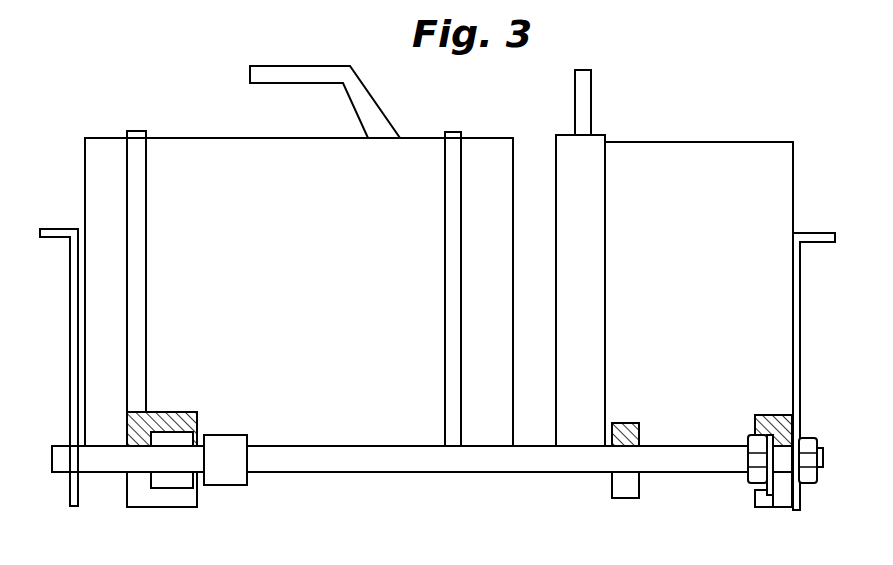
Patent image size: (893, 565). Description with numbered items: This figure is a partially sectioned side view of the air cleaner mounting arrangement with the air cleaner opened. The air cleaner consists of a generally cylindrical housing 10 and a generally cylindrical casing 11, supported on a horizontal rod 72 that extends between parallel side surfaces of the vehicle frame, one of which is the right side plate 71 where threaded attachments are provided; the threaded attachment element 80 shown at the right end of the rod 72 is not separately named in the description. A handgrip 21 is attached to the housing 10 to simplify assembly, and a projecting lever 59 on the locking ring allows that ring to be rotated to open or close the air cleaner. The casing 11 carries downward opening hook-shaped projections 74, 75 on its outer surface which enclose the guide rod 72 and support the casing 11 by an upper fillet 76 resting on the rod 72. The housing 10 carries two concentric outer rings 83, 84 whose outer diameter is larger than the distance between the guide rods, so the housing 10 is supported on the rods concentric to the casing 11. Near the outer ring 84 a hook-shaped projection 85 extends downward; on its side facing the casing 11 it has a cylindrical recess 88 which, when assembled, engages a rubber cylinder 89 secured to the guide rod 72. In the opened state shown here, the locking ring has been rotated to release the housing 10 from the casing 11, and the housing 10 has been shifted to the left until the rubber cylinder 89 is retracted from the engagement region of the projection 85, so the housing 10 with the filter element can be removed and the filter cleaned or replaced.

The housing 10 is at (213, 156).
The casing 11 is at (667, 156).
The handgrip 21 is at (310, 66).
The projecting lever 59 is at (586, 85).
The side surface 71 is at (812, 232).
The horizontal rod 72 is at (376, 464).
The hook-shaped projection 74 is at (628, 490).
The hook-shaped projection 75 is at (783, 490).
The upper fillet 76 is at (60, 228).
The nut 80 is at (748, 462).
The outer ring 83 is at (451, 138).
The outer ring 84 is at (137, 130).
The hook-shaped projection 85 is at (142, 493).
The cylindrical recess 88 is at (178, 483).
The rubber cylinder 89 is at (240, 488).